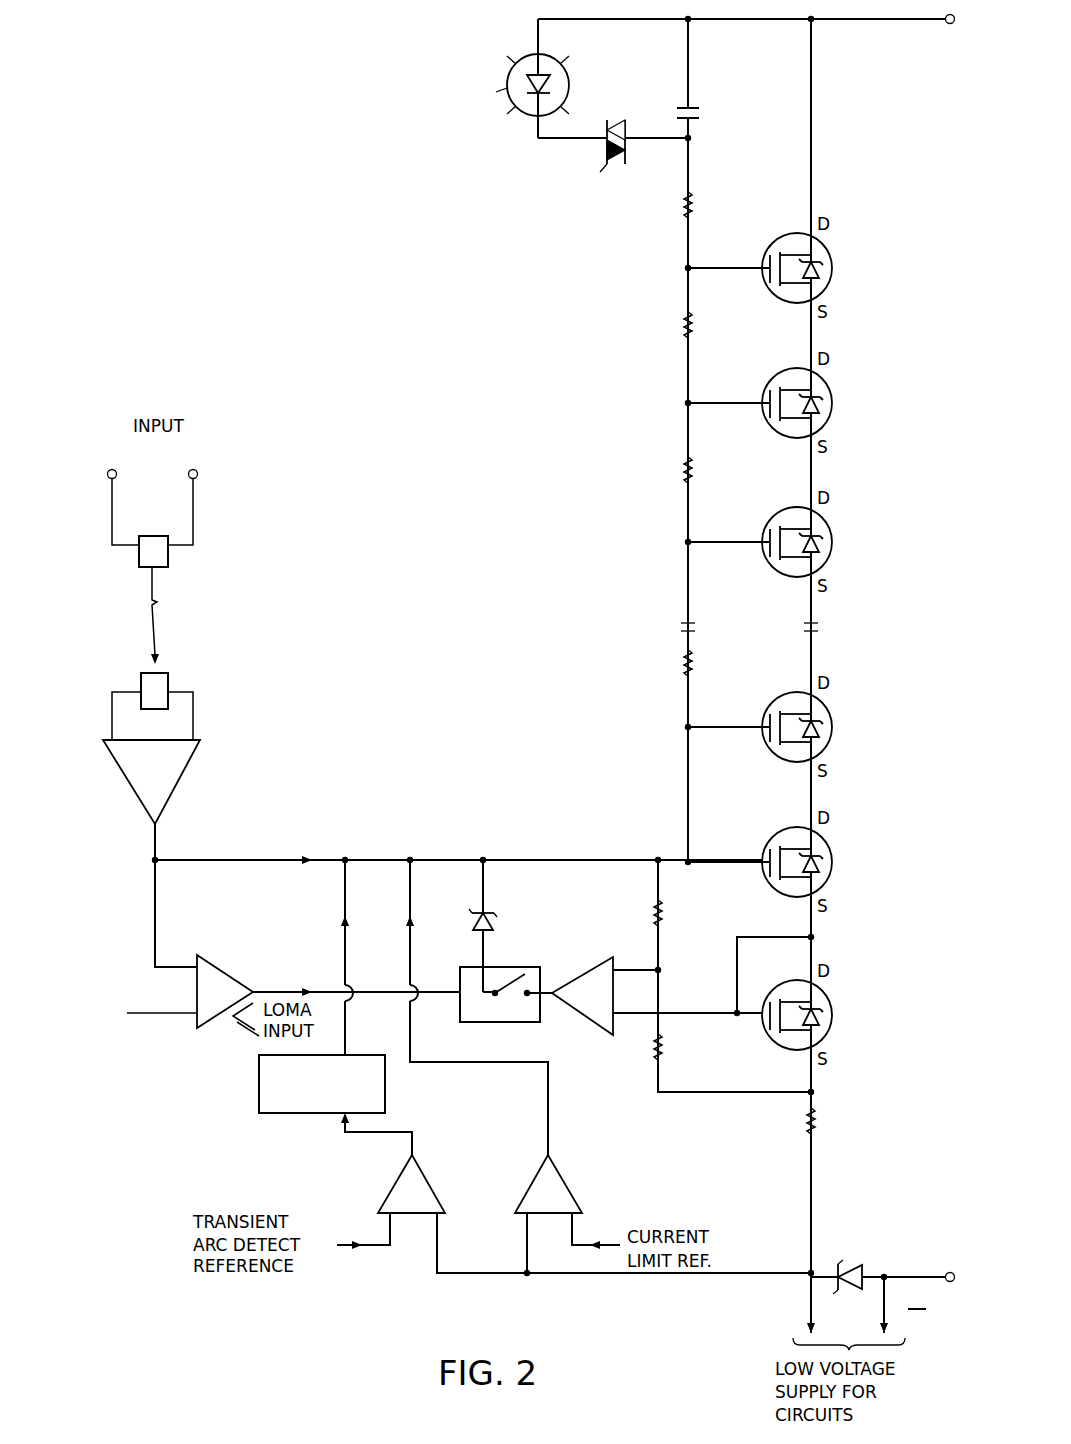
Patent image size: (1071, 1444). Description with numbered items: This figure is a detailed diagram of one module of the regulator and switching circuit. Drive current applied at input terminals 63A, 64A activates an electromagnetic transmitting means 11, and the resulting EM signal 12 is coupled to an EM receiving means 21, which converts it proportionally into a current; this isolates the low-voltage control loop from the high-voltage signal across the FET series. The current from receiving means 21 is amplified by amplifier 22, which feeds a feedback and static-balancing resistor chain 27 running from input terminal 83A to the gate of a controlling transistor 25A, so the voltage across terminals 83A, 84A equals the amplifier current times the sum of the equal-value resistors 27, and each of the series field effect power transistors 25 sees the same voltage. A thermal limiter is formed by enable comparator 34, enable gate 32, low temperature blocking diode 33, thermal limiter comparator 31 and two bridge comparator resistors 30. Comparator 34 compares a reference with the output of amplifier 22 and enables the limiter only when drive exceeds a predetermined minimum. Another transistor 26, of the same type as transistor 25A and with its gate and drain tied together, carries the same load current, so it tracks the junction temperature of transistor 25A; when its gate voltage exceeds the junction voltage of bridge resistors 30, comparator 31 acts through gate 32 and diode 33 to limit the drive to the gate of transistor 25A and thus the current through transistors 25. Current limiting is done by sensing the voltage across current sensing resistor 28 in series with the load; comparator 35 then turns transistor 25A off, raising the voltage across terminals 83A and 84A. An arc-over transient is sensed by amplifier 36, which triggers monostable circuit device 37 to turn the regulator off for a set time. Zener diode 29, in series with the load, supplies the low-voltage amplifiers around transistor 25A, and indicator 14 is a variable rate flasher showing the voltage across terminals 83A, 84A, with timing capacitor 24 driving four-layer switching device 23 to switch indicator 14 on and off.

The electromagnetic coupling means 11 is at (139, 563).
The EM signal 12 is at (152, 612).
The indicator 14 is at (505, 86).
The EM receiving means 21 is at (168, 684).
The amplifier 22 is at (137, 790).
The four-layer switching device 23 is at (612, 166).
The timing capacitor 24 is at (700, 115).
The transistor 25 is at (832, 267).
The controlling transistor 25A is at (832, 866).
The transistor 26 is at (832, 1018).
The feedback and static-balancing resistor chain 27 is at (682, 215).
The current sensing resistor 28 is at (817, 1125).
The zener diode 29 is at (848, 1266).
The bridge comparator resistors 30 is at (664, 918).
The thermal limiter comparator 31 is at (582, 974).
The enable gate 32 is at (530, 967).
The low temperature blocking diode 33 is at (473, 926).
The enable comparator 34 is at (232, 973).
The comparator 35 is at (570, 1185).
The amplifier 36 is at (394, 1180).
The monostable circuit device 37 is at (272, 1118).
The input terminal 63A is at (109, 470).
The input terminal 64A is at (190, 470).
The input terminal 83A is at (948, 24).
The output terminal 84A is at (956, 1258).